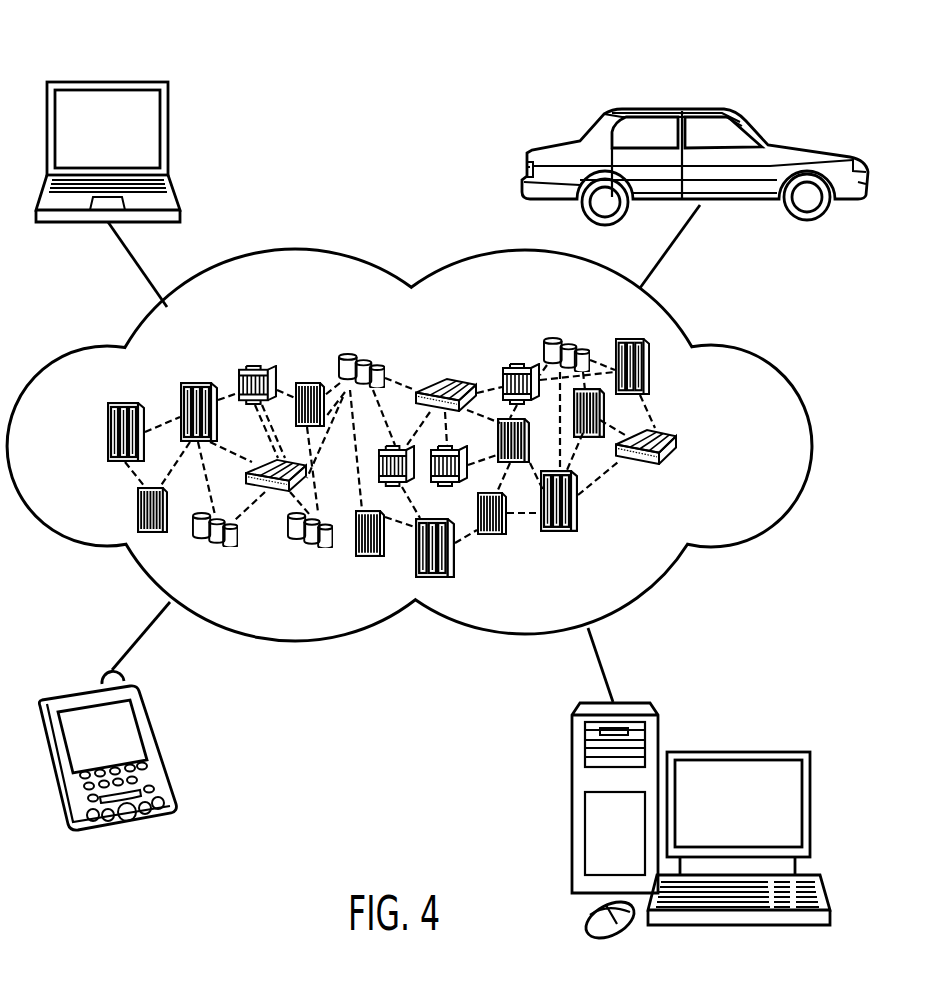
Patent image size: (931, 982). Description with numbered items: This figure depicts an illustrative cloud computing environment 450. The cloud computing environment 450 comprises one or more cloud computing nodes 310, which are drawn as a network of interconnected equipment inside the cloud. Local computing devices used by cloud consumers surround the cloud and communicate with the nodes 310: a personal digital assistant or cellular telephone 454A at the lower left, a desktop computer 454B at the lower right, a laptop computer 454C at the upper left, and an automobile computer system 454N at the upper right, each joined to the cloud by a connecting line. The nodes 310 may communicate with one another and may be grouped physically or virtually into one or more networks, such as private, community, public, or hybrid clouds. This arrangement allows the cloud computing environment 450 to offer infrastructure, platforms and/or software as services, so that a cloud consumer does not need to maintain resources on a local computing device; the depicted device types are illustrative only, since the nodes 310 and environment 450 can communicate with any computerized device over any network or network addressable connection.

The laptop computer 454C is at (106, 80).
The automobile computer system 454N is at (672, 110).
The cloud computing environment 450 is at (750, 347).
The cloud computing node 310 is at (688, 446).
The personal digital assistant (PDA) or cellular telephone 454A is at (92, 688).
The desktop computer 454B is at (738, 750).